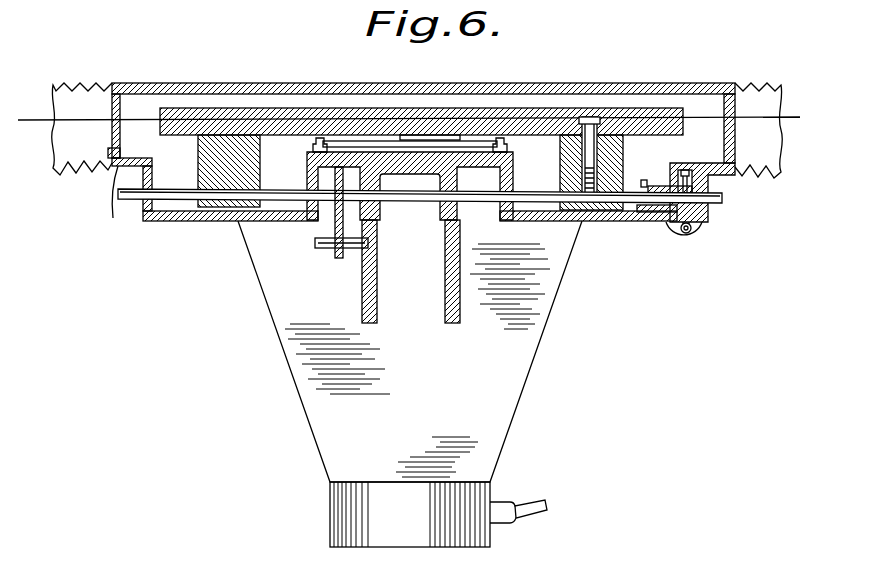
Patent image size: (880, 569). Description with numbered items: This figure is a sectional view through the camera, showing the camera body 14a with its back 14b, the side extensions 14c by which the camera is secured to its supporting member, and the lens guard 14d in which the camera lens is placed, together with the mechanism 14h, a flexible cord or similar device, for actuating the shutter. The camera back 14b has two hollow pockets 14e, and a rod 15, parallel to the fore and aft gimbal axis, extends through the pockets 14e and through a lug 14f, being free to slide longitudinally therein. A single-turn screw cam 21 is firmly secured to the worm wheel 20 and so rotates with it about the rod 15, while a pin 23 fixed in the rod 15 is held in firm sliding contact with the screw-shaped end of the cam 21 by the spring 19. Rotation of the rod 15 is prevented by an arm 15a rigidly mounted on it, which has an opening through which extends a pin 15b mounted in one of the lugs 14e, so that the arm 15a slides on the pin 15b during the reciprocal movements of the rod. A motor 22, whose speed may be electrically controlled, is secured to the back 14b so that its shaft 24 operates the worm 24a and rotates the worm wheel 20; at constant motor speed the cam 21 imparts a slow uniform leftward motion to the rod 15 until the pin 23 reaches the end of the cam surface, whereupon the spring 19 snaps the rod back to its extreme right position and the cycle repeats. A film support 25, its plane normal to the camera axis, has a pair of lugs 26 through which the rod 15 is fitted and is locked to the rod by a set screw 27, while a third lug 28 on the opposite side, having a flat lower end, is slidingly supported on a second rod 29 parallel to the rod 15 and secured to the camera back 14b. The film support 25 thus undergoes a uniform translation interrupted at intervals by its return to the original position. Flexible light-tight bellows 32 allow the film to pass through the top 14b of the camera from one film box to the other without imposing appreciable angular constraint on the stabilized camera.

The camera body 14a is at (410, 351).
The camera back 14b is at (128, 155).
The side extensions 14c is at (447, 308).
The lens guard 14d is at (345, 526).
The hollow pockets 14e is at (195, 222).
The lug 14f is at (708, 183).
The shutter actuating mechanism 14h is at (502, 516).
The rod 15 is at (423, 208).
The arm 15a is at (333, 222).
The pin 15b is at (352, 250).
The spring 19 is at (117, 180).
The worm wheel 20 is at (683, 176).
The single-turn screw cam 21 is at (655, 186).
The motor 22 is at (665, 237).
The pin 23 is at (644, 184).
The motor shaft 24 is at (683, 235).
The worm 24a is at (688, 235).
The film support 25 is at (497, 112).
The lugs 26 is at (247, 164).
The set screw 27 is at (588, 117).
The third lug 28 is at (408, 136).
The rod 29 is at (358, 140).
The flexible light-tight bellows 32 is at (84, 80).